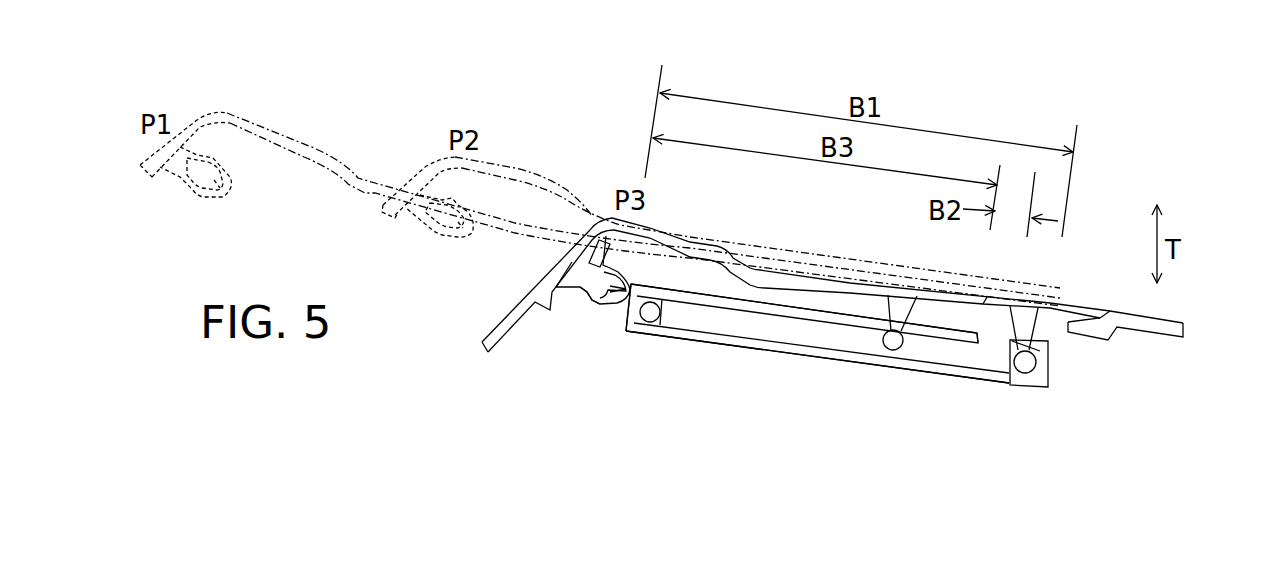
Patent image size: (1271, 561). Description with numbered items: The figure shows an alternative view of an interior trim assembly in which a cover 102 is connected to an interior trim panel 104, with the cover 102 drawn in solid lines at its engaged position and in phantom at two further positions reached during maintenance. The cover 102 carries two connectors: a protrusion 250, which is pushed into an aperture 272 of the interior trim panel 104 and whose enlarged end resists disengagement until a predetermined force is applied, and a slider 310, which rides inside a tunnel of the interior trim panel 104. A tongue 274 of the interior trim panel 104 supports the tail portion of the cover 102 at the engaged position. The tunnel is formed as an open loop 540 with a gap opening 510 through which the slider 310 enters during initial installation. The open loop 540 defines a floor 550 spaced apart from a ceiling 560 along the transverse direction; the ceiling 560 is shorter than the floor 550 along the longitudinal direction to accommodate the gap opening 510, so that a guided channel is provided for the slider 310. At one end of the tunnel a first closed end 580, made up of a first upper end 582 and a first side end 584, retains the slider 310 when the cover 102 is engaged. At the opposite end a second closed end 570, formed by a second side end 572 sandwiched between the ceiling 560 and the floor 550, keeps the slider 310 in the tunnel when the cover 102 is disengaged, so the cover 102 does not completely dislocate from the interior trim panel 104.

The cover 102 is at (683, 233).
The interior trim panel 104 is at (498, 326).
The protrusion 250 is at (611, 306).
The aperture 272 is at (590, 306).
The tongue 274 is at (1093, 333).
The slider 310 is at (1023, 367).
The gap opening 510 is at (996, 325).
The open loop 540 is at (947, 380).
The floor 550 is at (770, 349).
The ceiling 560 is at (792, 306).
The second closed end 570 is at (630, 273).
The second side end 572 is at (624, 315).
The first closed end 580 is at (1095, 369).
The first upper end 582 is at (1033, 352).
The first side end 584 is at (1047, 373).